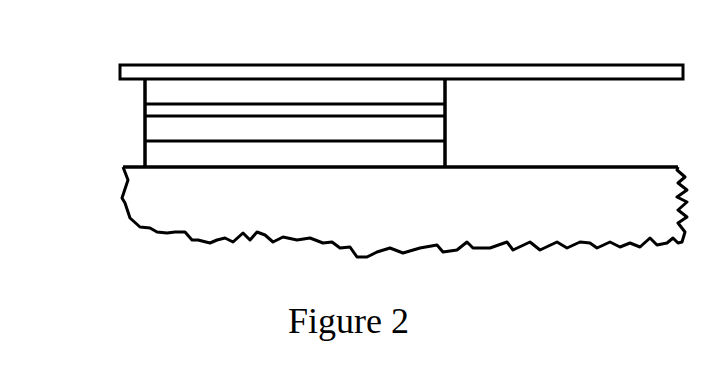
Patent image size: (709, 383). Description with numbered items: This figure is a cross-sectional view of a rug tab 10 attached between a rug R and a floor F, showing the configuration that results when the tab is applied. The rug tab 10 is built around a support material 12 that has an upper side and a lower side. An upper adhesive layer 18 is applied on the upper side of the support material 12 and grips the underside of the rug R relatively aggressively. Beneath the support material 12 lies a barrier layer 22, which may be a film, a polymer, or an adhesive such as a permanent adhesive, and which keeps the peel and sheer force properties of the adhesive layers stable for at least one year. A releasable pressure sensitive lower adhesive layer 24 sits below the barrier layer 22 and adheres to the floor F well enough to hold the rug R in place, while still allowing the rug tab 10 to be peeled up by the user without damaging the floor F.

The rug R is at (362, 72).
The rug tab 10 is at (458, 81).
The upper adhesive layer 18 is at (233, 90).
The support material 12 is at (158, 110).
The barrier layer 22 is at (168, 126).
The releasable pressure sensitive lower adhesive layer 24 is at (172, 150).
The floor F is at (421, 205).